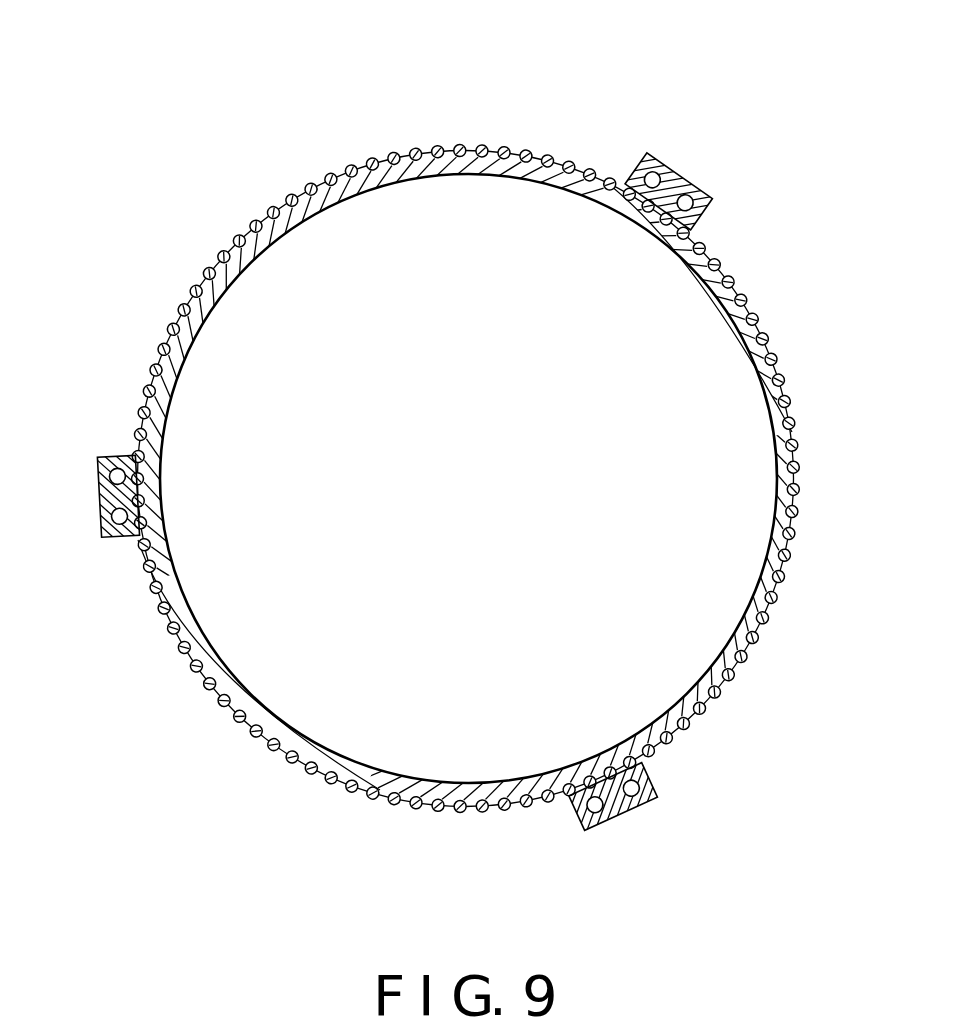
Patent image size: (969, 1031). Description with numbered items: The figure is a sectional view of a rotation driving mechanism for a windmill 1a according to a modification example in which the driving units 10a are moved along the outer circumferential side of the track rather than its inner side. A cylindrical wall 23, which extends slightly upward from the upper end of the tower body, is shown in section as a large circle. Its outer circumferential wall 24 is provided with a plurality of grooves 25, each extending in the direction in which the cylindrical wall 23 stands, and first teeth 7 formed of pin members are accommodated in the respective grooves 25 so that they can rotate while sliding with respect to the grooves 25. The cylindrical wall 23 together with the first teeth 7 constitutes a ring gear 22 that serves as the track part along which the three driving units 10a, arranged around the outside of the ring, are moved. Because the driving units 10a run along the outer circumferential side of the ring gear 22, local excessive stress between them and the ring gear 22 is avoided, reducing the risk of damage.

The substrate holding apparatus 1a is at (612, 97).
The first teeth 7 is at (441, 146).
The driving units 10a is at (700, 170).
The ring gear 22 is at (750, 257).
The cylindrical wall 23 is at (699, 283).
The outer circumferential wall 24 is at (336, 162).
The grooves 25 is at (396, 170).